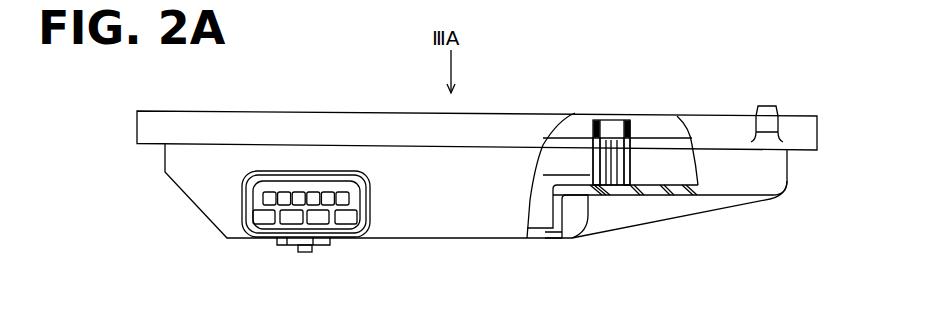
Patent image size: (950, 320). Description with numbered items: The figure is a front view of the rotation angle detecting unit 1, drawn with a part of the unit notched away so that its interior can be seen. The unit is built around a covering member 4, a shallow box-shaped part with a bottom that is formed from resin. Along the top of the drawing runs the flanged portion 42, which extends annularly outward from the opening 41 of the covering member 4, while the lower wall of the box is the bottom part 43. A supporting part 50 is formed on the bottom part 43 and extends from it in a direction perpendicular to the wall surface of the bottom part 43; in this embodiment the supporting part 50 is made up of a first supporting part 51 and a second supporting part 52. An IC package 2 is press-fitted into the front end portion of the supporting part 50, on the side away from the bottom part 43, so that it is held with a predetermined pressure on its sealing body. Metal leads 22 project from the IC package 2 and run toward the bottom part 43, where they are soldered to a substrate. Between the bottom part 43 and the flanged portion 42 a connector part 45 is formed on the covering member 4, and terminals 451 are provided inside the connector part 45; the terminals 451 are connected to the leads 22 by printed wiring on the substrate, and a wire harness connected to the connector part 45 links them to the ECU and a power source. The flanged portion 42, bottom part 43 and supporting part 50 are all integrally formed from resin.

The rotation angle detecting unit 1 is at (363, 64).
The IC package 2 is at (610, 121).
The covering member 4 is at (165, 162).
The leads 22 is at (615, 196).
The opening 41 is at (182, 110).
The flanged portion 42 is at (137, 124).
The bottom part 43 is at (540, 238).
The connector part 45 is at (271, 240).
The terminals 451 is at (306, 207).
The supporting part 50 is at (592, 123).
The first supporting part 51 is at (594, 157).
The second supporting part 52 is at (630, 157).